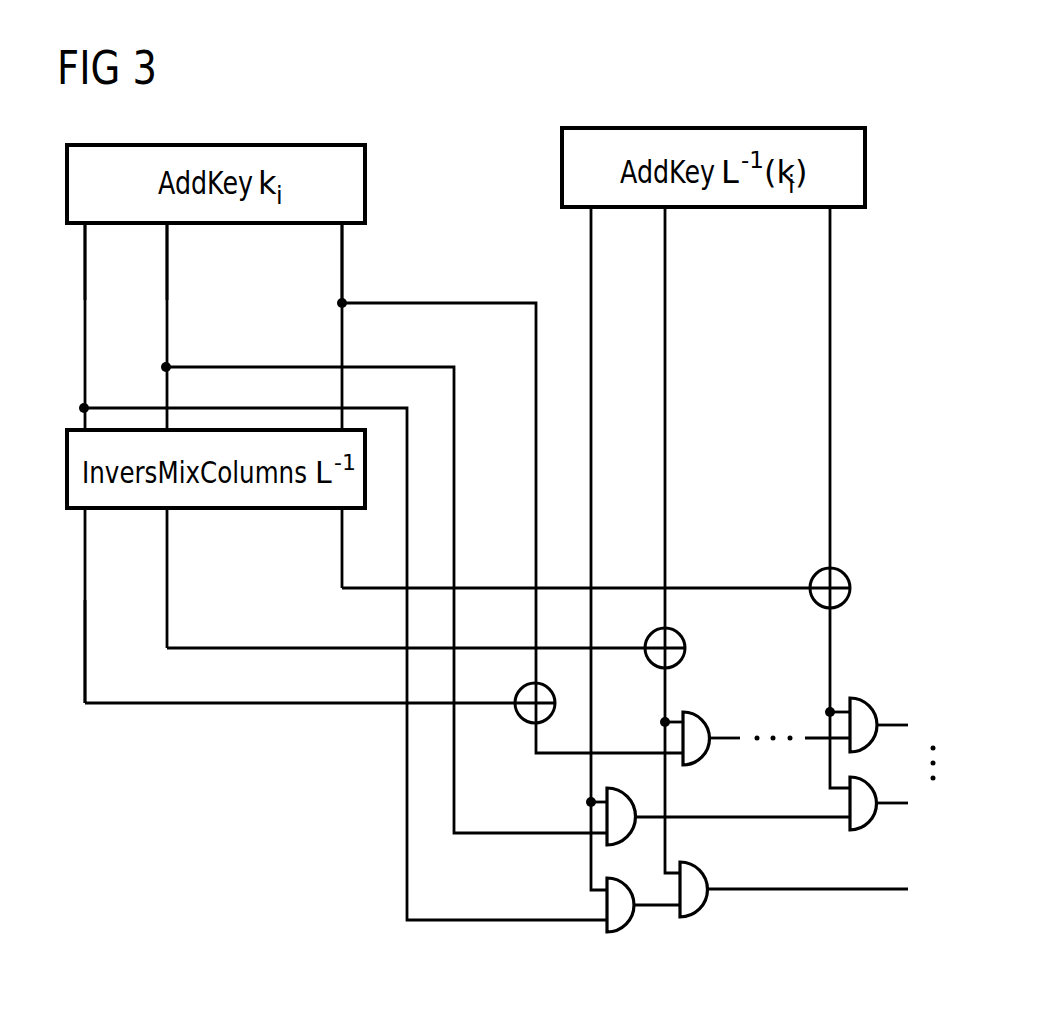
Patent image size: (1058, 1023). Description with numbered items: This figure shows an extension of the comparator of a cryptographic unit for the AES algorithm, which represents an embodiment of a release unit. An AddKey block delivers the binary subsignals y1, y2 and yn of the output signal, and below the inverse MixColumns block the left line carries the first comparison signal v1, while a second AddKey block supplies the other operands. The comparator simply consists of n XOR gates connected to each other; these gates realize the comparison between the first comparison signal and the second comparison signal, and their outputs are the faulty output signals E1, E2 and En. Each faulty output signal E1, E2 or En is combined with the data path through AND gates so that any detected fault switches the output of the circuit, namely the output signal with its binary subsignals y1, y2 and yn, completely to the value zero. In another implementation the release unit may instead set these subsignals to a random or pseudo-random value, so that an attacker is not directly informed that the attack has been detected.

The faulty output signal E1 is at (546, 689).
The faulty output signal E2 is at (678, 636).
The faulty output signal En is at (843, 610).
The binary subsignal of output signal y1 is at (501, 568).
The binary subsignal of output signal y2 is at (538, 525).
The binary subsignal of output signal yn is at (628, 486).
The first comparison signal v1 is at (68, 651).